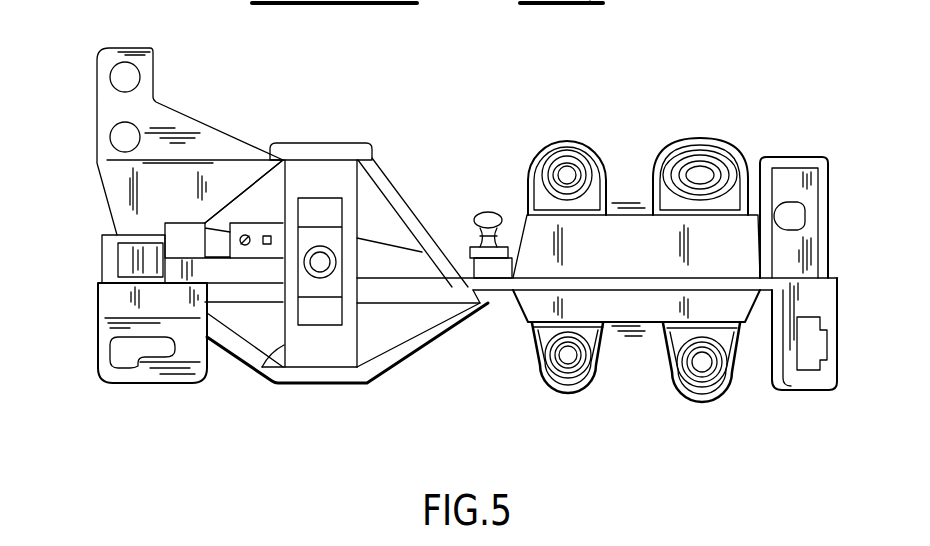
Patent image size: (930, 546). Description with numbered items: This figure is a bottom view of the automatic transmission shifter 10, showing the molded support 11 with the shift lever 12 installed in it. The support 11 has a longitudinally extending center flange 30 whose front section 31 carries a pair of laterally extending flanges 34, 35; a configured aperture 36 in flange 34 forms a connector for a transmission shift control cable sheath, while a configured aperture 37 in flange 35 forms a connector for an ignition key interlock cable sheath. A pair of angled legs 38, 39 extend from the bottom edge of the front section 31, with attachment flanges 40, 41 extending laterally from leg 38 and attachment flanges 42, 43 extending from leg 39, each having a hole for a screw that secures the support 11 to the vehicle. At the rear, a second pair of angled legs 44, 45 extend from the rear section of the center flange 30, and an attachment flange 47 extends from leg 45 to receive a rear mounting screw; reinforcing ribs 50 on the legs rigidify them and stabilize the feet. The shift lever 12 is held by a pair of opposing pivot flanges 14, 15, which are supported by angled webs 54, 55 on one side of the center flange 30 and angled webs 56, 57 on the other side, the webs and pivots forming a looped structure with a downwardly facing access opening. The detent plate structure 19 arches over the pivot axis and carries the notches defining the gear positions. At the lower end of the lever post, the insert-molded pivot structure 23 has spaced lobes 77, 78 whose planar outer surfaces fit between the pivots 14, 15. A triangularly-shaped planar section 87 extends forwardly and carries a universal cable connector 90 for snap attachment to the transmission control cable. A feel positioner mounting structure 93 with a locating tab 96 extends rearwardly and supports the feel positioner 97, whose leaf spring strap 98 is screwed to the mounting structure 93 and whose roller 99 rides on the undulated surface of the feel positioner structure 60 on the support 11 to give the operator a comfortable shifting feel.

The automatic transmission shifter 10 is at (125, 47).
The molded support 11 is at (328, 133).
The shift lever 12 is at (445, 215).
The pivot flange 14 is at (312, 383).
The pivot flange 15 is at (348, 143).
The detent plate structure 19 is at (377, 303).
The insert-molded pivot structure 23 is at (366, 218).
The center flange 30 is at (652, 270).
The front section 31 is at (565, 275).
The flange 34 is at (825, 158).
The flange 35 is at (775, 392).
The configured aperture 36 is at (787, 194).
The configured aperture 37 is at (805, 363).
The angled leg 38 is at (600, 258).
The angled leg 39 is at (610, 319).
The attachment flange 40 is at (590, 140).
The attachment flange 41 is at (712, 138).
The attachment flange 42 is at (565, 390).
The attachment flange 43 is at (700, 402).
The angled leg 44 is at (430, 0).
The angled leg 45 is at (507, 0).
The attachment flange 47 is at (585, 5).
The reinforcing rib 50 is at (167, 107).
The angled web 54 is at (230, 353).
The angled web 55 is at (415, 350).
The angled web 56 is at (238, 196).
The angled web 57 is at (433, 231).
The feel positioner structure 60 is at (102, 260).
The lobe 77 is at (347, 183).
The lobe 78 is at (257, 378).
The triangularly-shaped planar section 87 is at (420, 265).
The universal cable connector 90 is at (503, 212).
The feel positioner mounting structure 93 is at (252, 230).
The locating tab 96 is at (268, 235).
The feel positioner 97 is at (245, 270).
The leaf spring strap 98 is at (217, 222).
The roller 99 is at (203, 222).